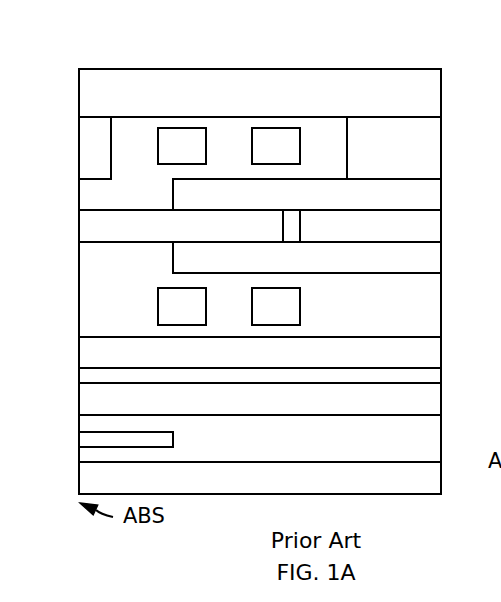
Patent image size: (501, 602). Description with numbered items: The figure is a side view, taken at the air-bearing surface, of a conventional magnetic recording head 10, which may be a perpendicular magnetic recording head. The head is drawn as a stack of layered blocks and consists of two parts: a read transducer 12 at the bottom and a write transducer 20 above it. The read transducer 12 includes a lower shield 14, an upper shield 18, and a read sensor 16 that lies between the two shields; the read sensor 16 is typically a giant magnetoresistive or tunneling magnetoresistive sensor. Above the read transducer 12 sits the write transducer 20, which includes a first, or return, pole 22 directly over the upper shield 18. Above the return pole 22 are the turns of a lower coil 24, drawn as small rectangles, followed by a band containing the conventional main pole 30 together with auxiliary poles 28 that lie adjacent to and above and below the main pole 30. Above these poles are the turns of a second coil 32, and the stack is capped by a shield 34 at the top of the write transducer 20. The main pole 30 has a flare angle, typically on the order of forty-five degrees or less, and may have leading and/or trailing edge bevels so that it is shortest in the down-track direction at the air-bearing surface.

The magnetic recording head 10 is at (267, 48).
The read transducer 12 is at (47, 417).
The shield 14 is at (441, 478).
The read sensor 16 is at (79, 438).
The shield 18 is at (441, 398).
The write transducer 20 is at (48, 166).
The return pole 22 is at (79, 352).
The coil 24 is at (110, 319).
The auxiliary poles 28 is at (441, 190).
The main pole 30 is at (79, 229).
The coil 32 is at (120, 138).
The shield 34 is at (441, 80).